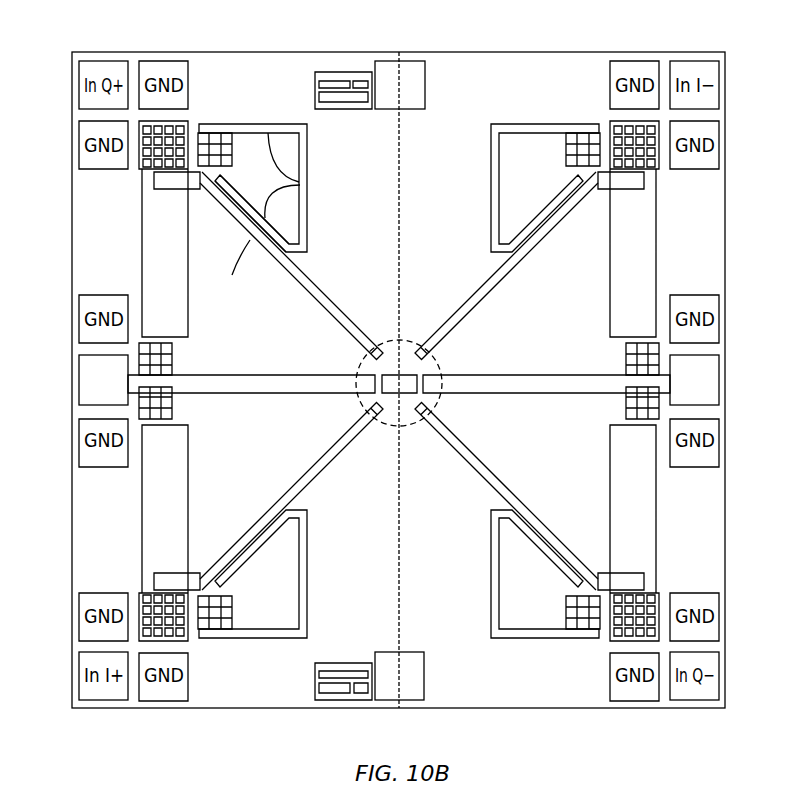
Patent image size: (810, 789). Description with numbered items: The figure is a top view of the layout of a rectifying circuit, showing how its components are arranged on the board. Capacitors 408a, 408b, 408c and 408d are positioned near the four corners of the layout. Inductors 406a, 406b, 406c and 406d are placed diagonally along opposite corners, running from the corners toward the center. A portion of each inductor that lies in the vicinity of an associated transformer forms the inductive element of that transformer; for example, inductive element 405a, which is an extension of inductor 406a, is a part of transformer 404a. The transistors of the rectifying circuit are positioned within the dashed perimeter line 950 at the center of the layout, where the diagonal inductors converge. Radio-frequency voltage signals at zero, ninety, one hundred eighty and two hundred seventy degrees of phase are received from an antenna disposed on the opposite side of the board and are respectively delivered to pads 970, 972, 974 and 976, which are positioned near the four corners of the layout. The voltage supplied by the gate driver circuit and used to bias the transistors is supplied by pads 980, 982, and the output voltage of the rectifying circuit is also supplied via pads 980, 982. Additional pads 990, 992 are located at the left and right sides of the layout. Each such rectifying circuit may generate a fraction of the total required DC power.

The pad 970 is at (103, 61).
The pad 972 is at (79, 680).
The pad 974 is at (719, 680).
The pad 976 is at (695, 61).
The pad 980 is at (399, 52).
The pad 982 is at (399, 708).
The DC out pad (right) 990 is at (719, 379).
The DC out pad (left) 992 is at (79, 379).
The transformer 404a is at (340, 176).
The inductive element 405a is at (248, 238).
The inductor 406a is at (317, 302).
The inductor 406b is at (317, 460).
The inductor 406c is at (481, 460).
The inductor 406d is at (481, 303).
The capacitor 408a is at (215, 133).
The capacitor 408b is at (215, 629).
The capacitor 408c is at (583, 629).
The capacitor 408d is at (583, 133).
The dashed perimeter line 950 is at (441, 398).